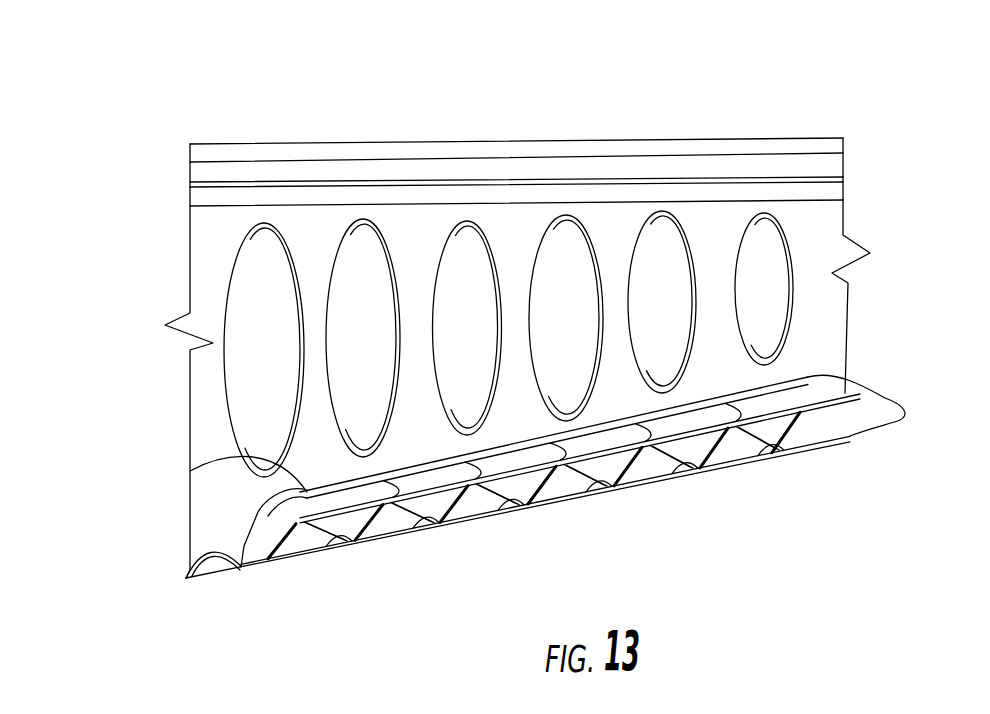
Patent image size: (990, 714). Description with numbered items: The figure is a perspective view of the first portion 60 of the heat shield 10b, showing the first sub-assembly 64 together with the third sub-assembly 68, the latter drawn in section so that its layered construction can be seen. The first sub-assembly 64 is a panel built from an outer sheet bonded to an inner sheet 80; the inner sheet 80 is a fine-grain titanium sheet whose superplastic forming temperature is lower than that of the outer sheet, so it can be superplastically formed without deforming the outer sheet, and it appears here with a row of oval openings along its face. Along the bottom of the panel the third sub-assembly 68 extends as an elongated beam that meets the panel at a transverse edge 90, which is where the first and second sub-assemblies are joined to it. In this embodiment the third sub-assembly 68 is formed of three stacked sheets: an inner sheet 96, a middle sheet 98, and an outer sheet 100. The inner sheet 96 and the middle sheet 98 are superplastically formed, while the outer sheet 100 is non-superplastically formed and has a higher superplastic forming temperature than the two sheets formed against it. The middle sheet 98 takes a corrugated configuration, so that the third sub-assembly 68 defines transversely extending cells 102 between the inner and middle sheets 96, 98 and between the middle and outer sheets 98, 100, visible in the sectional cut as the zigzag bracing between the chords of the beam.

The heat shield 10b is at (749, 80).
The first portion 60 is at (130, 330).
The first sub-assembly 64 is at (812, 249).
The third sub-assembly 68 is at (893, 400).
The inner sheet 80 is at (427, 227).
The transverse edge 90 is at (187, 577).
The inner sheet 96 is at (190, 471).
The middle sheet 98 is at (392, 535).
The outer sheet 100 is at (418, 528).
The transversely extending cells 102 is at (503, 503).